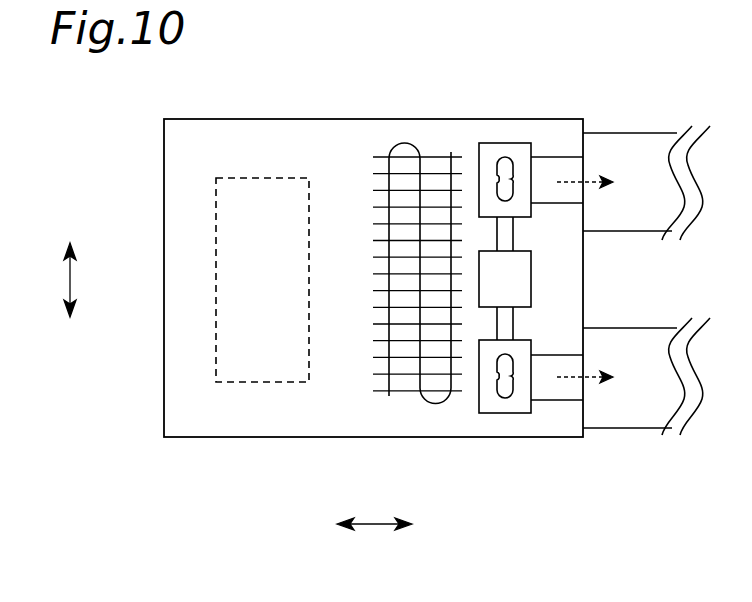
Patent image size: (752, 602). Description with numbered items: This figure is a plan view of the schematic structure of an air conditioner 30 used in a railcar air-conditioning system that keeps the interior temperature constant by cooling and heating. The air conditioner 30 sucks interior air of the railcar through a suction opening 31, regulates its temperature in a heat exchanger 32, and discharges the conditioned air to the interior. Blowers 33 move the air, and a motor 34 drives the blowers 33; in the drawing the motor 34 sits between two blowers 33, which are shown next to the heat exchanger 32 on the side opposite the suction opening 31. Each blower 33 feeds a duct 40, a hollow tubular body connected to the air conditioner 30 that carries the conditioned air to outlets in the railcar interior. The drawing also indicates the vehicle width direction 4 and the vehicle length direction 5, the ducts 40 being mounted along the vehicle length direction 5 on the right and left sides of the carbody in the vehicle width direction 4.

The air conditioner 30 is at (266, 437).
The suction opening 31 is at (214, 244).
The heat exchanger 32 is at (368, 158).
The blowers 33 is at (489, 155).
The motor 34 is at (478, 303).
The duct 40 is at (626, 132).
The vehicle width direction 4 is at (70, 277).
The vehicle length direction 5 is at (372, 525).